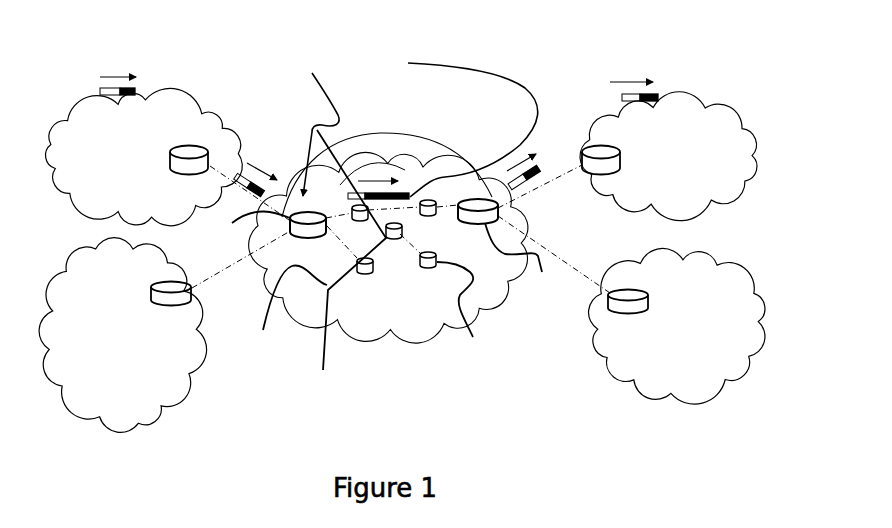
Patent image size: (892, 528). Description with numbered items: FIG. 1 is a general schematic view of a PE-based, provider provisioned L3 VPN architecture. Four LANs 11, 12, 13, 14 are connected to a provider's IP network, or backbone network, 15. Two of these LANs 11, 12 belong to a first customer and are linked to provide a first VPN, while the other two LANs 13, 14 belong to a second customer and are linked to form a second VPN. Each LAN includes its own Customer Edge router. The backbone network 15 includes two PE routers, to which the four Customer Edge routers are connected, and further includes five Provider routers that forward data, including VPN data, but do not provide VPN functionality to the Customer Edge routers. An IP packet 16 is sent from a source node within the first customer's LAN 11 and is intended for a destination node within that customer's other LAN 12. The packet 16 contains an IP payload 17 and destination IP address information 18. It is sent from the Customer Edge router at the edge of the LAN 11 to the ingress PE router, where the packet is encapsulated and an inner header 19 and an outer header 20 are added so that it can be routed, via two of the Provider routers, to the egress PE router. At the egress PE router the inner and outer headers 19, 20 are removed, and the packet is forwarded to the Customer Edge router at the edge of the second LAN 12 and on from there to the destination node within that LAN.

The LAN 11 is at (210, 107).
The LAN 12 is at (708, 105).
The LAN 13 is at (167, 395).
The LAN 14 is at (673, 393).
The provider's IP network 15 is at (396, 336).
The IP packet 16 is at (100, 92).
The IP payload 17 is at (107, 90).
The destination IP address information 18 is at (135, 92).
The inner header 19 is at (387, 193).
The outer header 20 is at (430, 201).